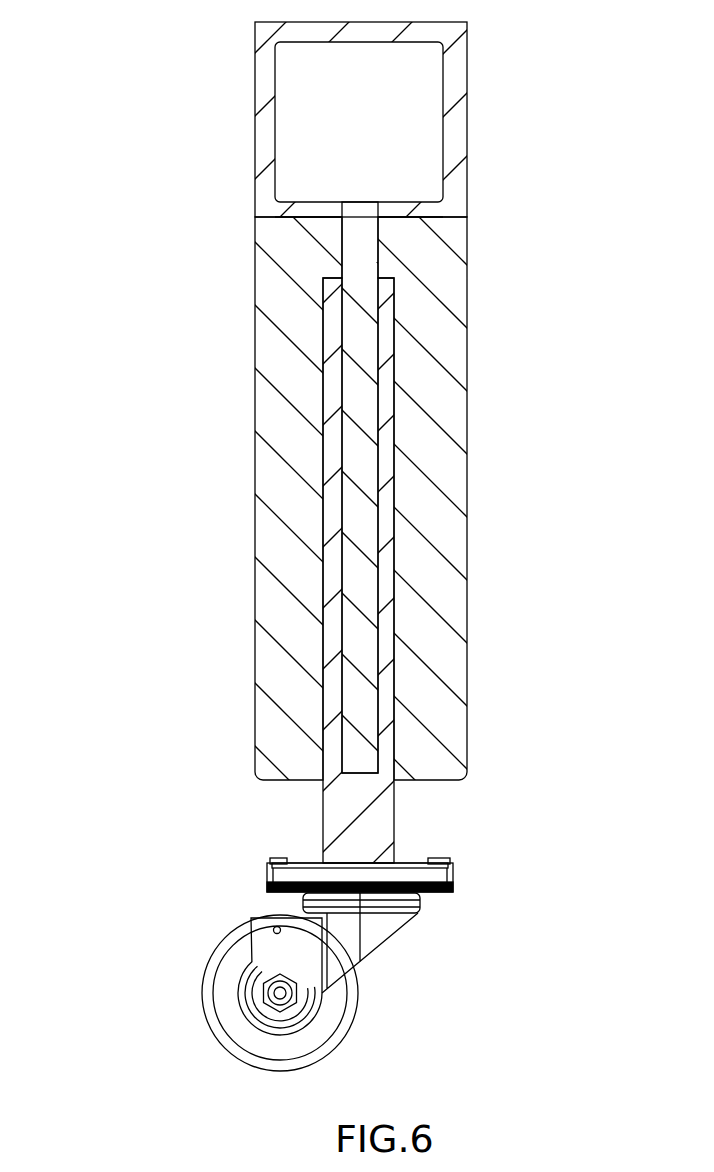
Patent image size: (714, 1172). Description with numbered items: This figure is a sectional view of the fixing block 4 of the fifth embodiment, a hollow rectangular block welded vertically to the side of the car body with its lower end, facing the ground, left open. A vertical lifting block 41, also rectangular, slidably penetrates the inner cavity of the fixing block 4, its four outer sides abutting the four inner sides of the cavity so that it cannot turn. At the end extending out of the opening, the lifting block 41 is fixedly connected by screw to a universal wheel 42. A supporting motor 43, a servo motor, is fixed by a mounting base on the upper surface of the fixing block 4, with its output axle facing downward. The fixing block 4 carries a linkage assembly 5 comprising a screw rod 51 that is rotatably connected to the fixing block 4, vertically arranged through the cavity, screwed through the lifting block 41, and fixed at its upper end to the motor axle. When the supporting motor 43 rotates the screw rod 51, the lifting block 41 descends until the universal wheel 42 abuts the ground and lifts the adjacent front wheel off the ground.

The fixing block 4 is at (283, 490).
The lifting block 41 is at (333, 630).
The universal wheel 42 is at (230, 990).
The supporting motor 43 is at (340, 108).
The linkage assembly 5 is at (399, 591).
The screw rod 51 is at (360, 410).